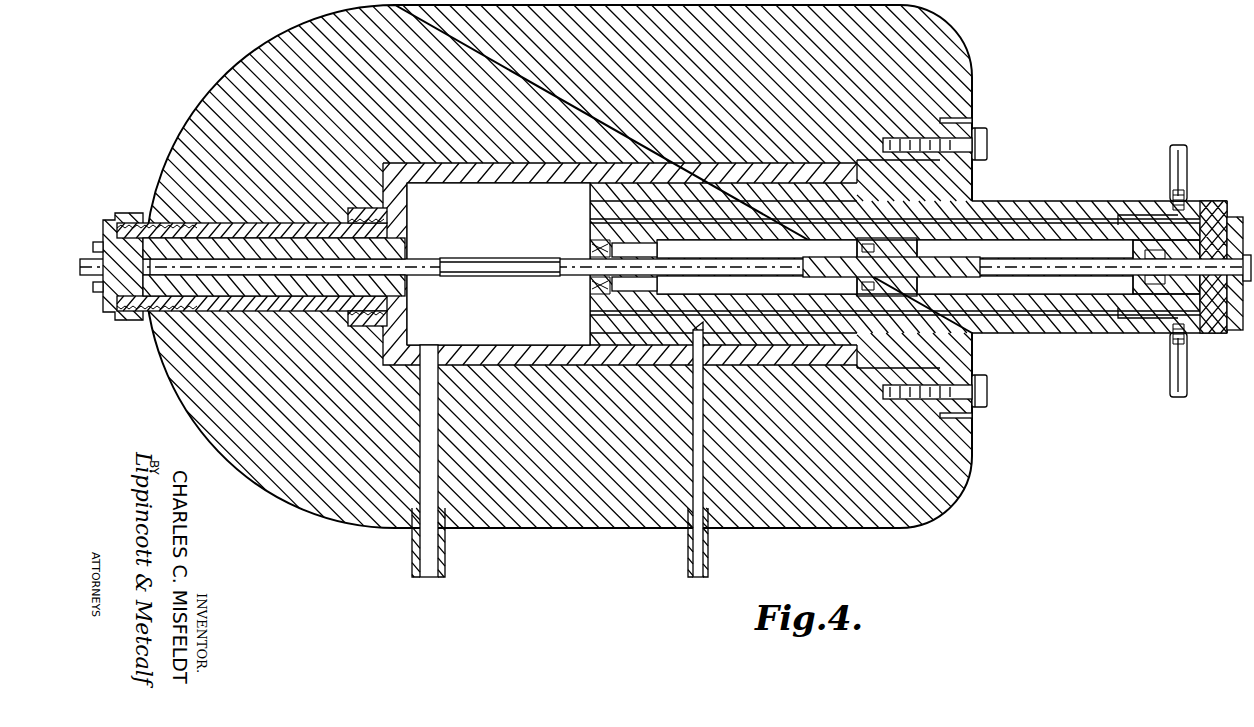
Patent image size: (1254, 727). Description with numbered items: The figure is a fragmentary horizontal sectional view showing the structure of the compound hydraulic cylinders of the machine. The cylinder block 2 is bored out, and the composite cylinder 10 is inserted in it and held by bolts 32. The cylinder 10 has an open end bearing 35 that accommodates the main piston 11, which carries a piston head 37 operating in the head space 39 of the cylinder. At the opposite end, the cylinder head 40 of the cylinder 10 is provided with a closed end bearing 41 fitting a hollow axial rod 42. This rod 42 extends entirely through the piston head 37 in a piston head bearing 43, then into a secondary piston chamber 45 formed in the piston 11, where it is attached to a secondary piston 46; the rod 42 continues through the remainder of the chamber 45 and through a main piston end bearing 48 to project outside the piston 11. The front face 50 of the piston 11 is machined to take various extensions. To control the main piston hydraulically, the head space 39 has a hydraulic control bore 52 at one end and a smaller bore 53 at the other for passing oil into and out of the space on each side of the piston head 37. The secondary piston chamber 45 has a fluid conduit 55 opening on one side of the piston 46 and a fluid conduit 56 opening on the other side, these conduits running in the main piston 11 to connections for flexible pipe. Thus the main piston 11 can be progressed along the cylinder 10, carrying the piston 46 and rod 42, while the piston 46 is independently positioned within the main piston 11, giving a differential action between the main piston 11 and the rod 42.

The cylinder block 2 is at (213, 90).
The composite cylinder 10 is at (476, 183).
The main piston 11 is at (1018, 203).
The bolts 32 is at (984, 132).
The open end bearing 35 is at (975, 178).
The piston head 37 is at (590, 204).
The head space 39 is at (506, 314).
The cylinder head 40 is at (403, 333).
The closed end bearing 41 is at (132, 217).
The hollow axial rod 42 is at (517, 258).
The piston head bearing 43 is at (586, 288).
The secondary piston chamber 45 is at (895, 266).
The secondary piston 46 is at (917, 250).
The main piston end bearing 48 is at (1152, 246).
The front face 50 is at (1206, 204).
The hydraulic control bore 52 is at (415, 540).
The smaller bore 53 is at (690, 540).
The fluid conduit 55 is at (1052, 226).
The fluid conduit 56 is at (1118, 316).